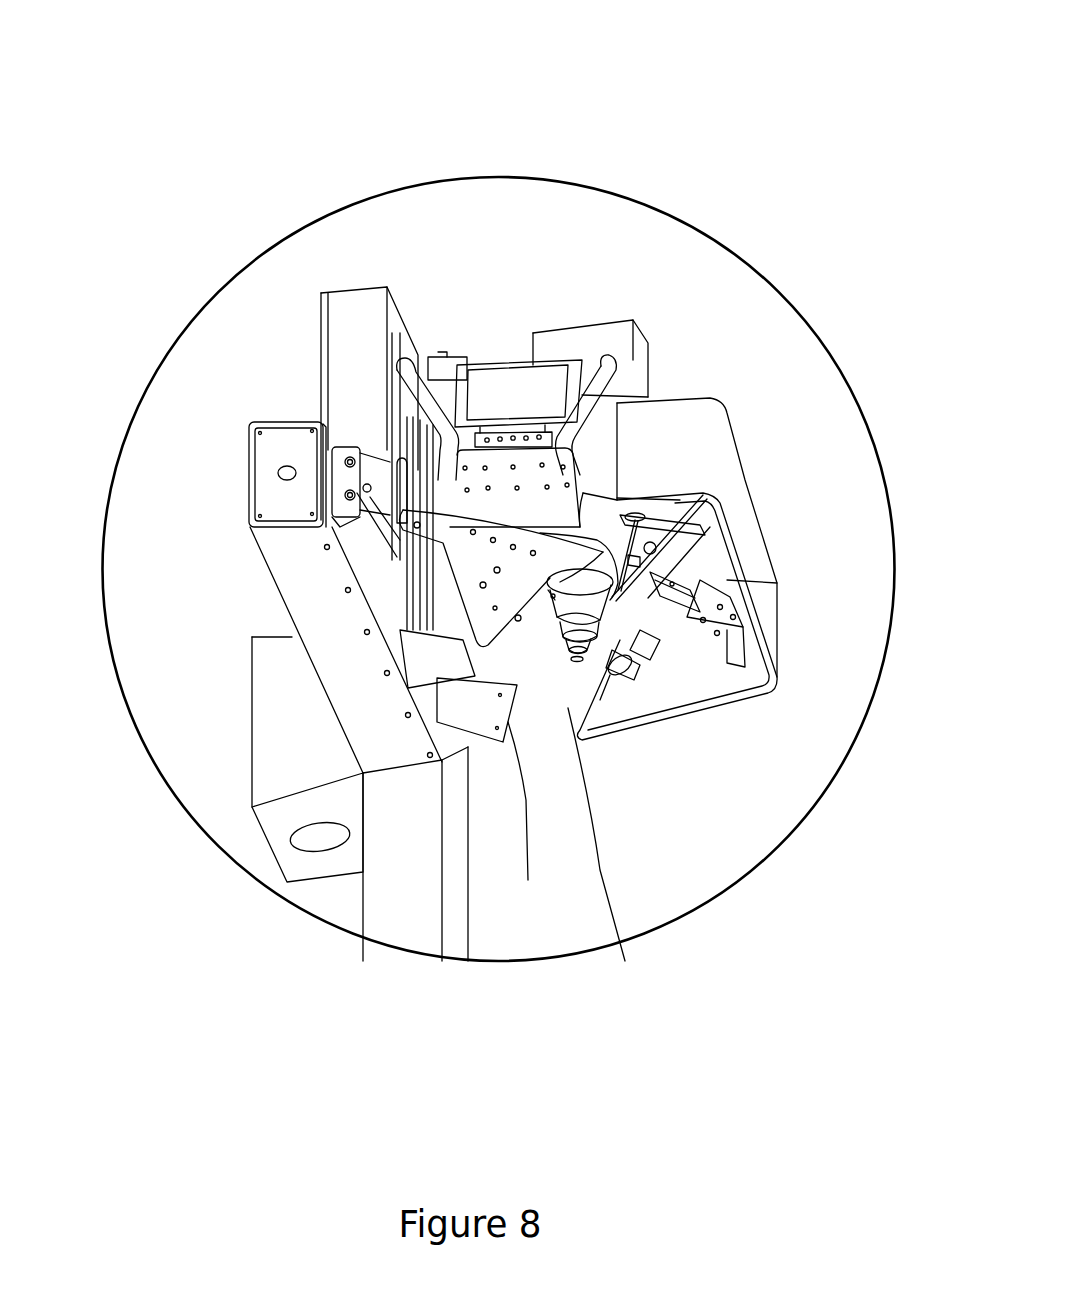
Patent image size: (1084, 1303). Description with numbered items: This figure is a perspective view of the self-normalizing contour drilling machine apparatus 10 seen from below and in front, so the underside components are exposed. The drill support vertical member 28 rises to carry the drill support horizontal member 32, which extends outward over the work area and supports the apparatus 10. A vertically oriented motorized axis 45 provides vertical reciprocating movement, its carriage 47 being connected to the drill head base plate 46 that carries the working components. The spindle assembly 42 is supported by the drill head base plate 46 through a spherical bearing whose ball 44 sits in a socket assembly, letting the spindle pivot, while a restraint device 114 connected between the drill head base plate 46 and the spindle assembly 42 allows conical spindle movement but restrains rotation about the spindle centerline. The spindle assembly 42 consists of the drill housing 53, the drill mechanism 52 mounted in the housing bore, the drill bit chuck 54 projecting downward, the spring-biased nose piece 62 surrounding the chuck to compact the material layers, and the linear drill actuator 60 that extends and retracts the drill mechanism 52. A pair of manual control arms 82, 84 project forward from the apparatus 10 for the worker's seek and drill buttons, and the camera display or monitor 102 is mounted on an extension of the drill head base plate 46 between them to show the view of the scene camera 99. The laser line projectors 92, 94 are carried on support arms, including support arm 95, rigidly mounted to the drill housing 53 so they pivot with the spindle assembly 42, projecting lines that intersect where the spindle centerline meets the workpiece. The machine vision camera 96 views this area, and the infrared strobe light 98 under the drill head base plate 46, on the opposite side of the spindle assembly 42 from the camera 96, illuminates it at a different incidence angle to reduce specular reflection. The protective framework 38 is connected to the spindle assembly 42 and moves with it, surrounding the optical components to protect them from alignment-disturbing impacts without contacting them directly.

The self-normalizing contour drilling machine apparatus 10 is at (670, 327).
The drill support vertical member 28 is at (400, 900).
The drill support horizontal member 32 is at (393, 572).
The protective framework 38 is at (745, 497).
The spindle assembly 42 is at (548, 590).
The ball 44 is at (548, 594).
The motorized axis 45 is at (437, 392).
The drill head base plate 46 is at (522, 657).
The carriage 47 is at (420, 563).
The drill mechanism 52 is at (573, 670).
The drill housing 53 is at (578, 652).
The drill bit chuck 54 is at (633, 647).
The drill actuator 60 is at (618, 343).
The nose piece 62 is at (620, 650).
The manual control arm 82 is at (387, 380).
The manual control arm 84 is at (588, 381).
The laser line projector 92 is at (683, 530).
The laser line projector 94 is at (700, 586).
The support arm 95 is at (697, 580).
The machine vision camera 96 is at (673, 493).
The infrared strobe light 98 is at (528, 880).
The scene camera 99 is at (627, 657).
The camera display or monitor 102 is at (500, 380).
The restraint device 114 is at (677, 538).